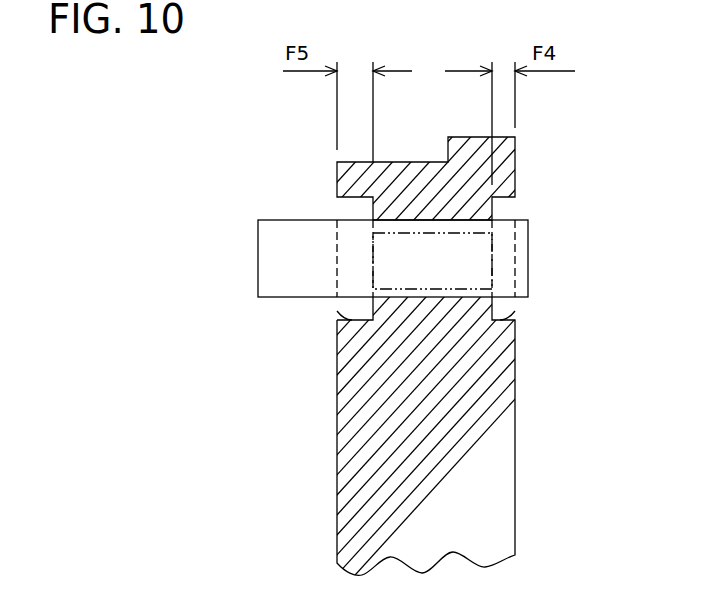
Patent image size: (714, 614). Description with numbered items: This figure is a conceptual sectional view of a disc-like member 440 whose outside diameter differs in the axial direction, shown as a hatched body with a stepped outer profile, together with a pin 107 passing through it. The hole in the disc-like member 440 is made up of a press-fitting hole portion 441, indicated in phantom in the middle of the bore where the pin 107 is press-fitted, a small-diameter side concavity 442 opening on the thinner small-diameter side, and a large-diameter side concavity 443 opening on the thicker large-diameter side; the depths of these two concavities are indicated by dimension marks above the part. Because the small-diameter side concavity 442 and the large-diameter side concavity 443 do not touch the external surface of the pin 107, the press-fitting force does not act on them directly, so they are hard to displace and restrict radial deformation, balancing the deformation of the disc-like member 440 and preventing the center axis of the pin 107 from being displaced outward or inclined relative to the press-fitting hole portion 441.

The pin 107 is at (277, 297).
The disc-like member 440 is at (516, 158).
The press-fitting hole portion 441 is at (455, 289).
The small-diameter side concavity 442 is at (337, 311).
The large-diameter side concavity 443 is at (515, 311).